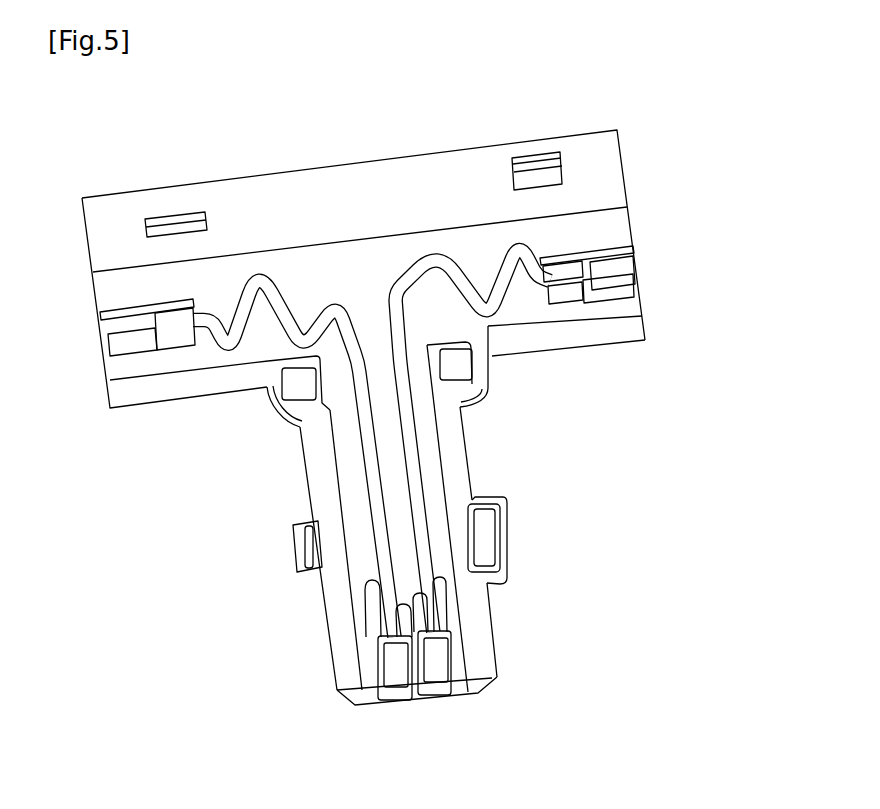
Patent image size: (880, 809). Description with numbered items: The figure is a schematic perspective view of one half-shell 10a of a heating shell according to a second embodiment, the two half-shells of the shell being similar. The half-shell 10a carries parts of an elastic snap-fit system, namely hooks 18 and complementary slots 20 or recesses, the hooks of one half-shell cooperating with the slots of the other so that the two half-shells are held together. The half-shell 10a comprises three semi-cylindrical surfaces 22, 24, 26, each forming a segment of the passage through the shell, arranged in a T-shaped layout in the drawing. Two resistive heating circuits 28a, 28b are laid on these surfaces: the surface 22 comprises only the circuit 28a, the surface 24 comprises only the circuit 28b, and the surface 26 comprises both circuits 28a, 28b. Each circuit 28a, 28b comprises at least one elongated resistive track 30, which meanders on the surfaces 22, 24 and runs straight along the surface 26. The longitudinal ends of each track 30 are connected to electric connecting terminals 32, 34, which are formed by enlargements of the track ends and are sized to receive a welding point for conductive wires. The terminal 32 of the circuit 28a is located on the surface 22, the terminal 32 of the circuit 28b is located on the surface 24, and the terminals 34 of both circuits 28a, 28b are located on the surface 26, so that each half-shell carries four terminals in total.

The half-shell 10a is at (690, 216).
The hooks 18 is at (527, 162).
The slots 20 is at (168, 217).
The semi-cylindrical surface 22 is at (115, 293).
The semi-cylindrical surface 24 is at (620, 227).
The semi-cylindrical surface 26 is at (440, 570).
The resistive heating circuit 28a is at (270, 266).
The resistive heating circuit 28b is at (427, 245).
The elongated resistive track 30 is at (371, 365).
The electric connecting terminal 32 is at (103, 356).
The electric connecting terminal 34 is at (429, 700).